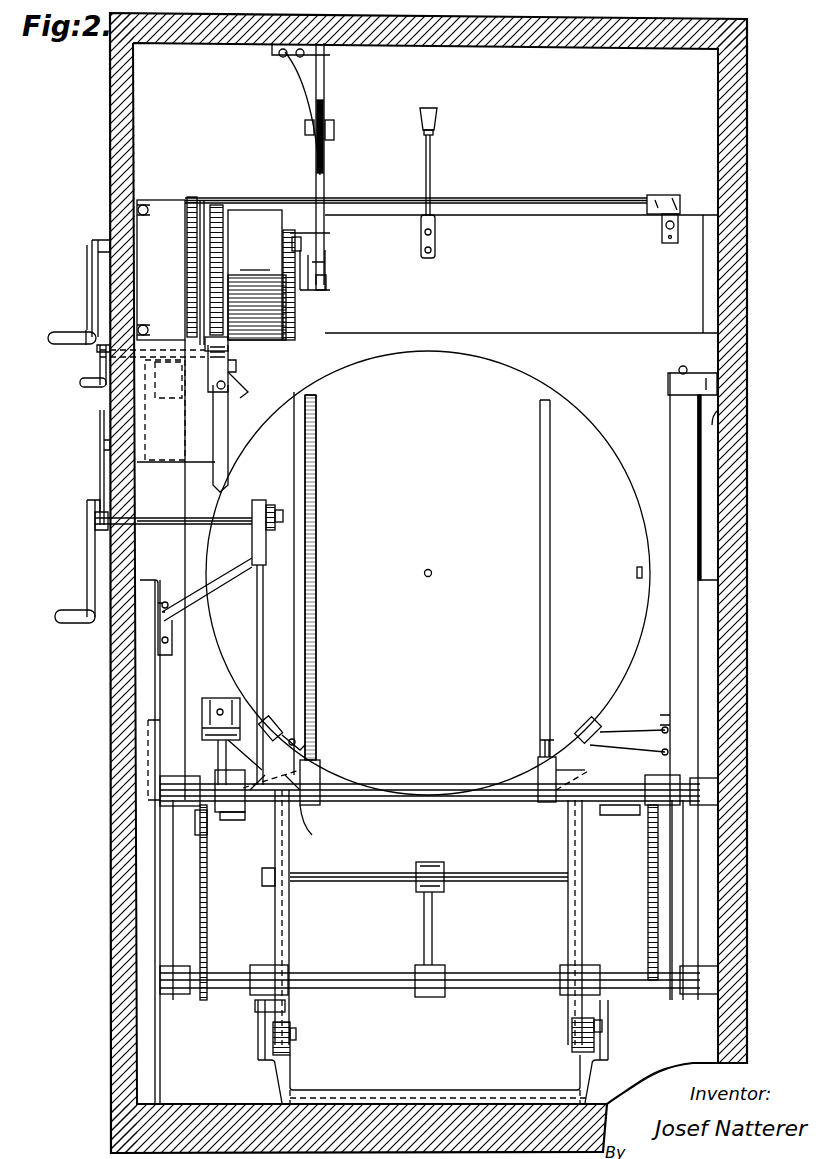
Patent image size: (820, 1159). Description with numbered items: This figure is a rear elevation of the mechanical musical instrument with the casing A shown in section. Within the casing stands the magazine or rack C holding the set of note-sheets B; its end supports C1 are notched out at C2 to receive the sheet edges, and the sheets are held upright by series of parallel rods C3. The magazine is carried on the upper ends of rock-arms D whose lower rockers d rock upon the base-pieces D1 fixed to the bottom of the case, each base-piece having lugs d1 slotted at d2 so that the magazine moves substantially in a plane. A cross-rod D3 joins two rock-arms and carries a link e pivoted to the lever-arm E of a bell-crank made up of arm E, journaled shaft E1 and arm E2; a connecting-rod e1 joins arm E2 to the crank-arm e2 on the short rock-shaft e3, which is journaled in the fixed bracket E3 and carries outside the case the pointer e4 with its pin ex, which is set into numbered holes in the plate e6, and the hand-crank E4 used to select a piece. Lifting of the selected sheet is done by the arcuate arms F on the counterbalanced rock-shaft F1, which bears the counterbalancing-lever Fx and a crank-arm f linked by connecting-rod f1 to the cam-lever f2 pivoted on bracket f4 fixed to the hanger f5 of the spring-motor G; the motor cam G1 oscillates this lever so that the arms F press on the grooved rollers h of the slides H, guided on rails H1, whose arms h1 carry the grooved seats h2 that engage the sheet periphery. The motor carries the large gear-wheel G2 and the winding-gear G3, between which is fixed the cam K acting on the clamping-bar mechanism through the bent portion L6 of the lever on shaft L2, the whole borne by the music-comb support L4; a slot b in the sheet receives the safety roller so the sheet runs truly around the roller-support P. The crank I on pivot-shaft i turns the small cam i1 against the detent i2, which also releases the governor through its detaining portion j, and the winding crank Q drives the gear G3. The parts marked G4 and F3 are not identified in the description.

The casing A is at (570, 103).
The note-sheets B is at (428, 573).
The roller-support P is at (423, 118).
The shaft L2 is at (522, 198).
The main casting or music-comb support L4 is at (509, 270).
The angularly-bent portion L6 is at (200, 225).
The cam K is at (185, 252).
The spring-motor G is at (248, 225).
The cam G1 is at (287, 230).
The large motion-transmitting gear-wheel G2 is at (217, 205).
The winding-gear G3 is at (190, 197).
The spring G4 is at (290, 315).
The crank-arm f is at (303, 446).
The connecting-rod f1 is at (290, 462).
The cam-lever f2 is at (300, 240).
The supporting-bracket f4 is at (312, 262).
The support or hanger f5 is at (324, 182).
The motor-winding crank Q is at (92, 292).
The small crank I is at (100, 372).
The pivot-shaft i is at (229, 368).
The small cam i1 is at (236, 366).
The detent i2 is at (245, 380).
The governor-detaining portion j is at (228, 400).
The pin ex is at (100, 432).
The plate e6 is at (104, 452).
The hand or pointer e4 is at (100, 490).
The hand-crank E4 is at (90, 572).
The short rock-shaft e3 is at (180, 525).
The crank-arm e2 is at (255, 555).
The fixed bracket E3 is at (220, 600).
The parallel rods C3 is at (317, 606).
The rails H1 is at (660, 468).
The slot b is at (636, 573).
The slides H is at (158, 740).
The grooved rollers h is at (215, 712).
The arms h1 is at (235, 758).
The grooved blocks or seats h2 is at (272, 718).
The counterbalancing-lever Fx is at (222, 705).
The notches C2 is at (310, 745).
The end supports C1 is at (322, 765).
The magazine or rack C is at (552, 748).
The counterbalanced rock-shaft F1 is at (418, 782).
The cross-rod D3 is at (382, 873).
The link e is at (428, 862).
The rack F3 is at (207, 878).
The arcuate arms F is at (207, 925).
The connecting-rod e1 is at (248, 930).
The rock-arms D is at (340, 935).
The lever-arm E is at (424, 932).
The journaled shaft E1 is at (478, 972).
The lever-arm E2 is at (252, 1000).
The rockers d is at (292, 1036).
The lugs d1 is at (262, 1045).
The slots d2 is at (288, 1030).
The base-pieces D1 is at (285, 1068).